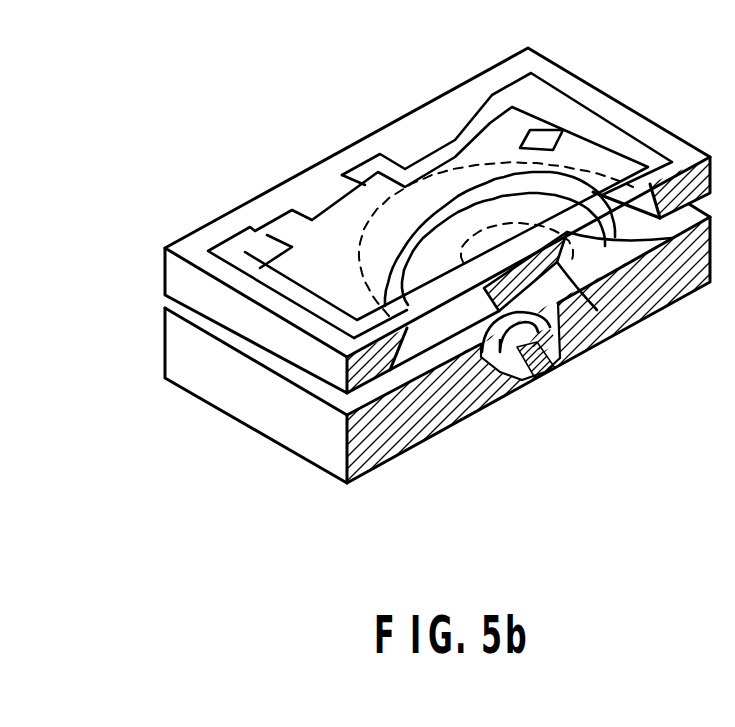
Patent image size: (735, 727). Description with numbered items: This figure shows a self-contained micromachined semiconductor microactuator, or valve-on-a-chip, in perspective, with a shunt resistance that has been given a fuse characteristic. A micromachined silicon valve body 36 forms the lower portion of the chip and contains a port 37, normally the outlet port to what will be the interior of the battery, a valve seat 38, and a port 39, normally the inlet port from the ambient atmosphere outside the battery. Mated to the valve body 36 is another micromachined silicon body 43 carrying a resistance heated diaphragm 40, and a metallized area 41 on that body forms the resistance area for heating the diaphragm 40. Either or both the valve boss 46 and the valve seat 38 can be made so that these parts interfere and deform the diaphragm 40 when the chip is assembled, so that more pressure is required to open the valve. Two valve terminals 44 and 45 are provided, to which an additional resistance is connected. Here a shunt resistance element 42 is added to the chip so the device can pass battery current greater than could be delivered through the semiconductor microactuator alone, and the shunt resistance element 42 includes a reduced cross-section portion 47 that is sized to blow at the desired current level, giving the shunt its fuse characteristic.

The valve body 36 is at (264, 408).
The port 37 is at (523, 382).
The valve seat 38 is at (563, 367).
The port 39 is at (567, 203).
The resistance heated diaphragm 40 is at (635, 126).
The metallized area 41 is at (383, 248).
The shunt resistance element 42 is at (382, 155).
The micromachined silicon body 43 is at (245, 317).
The valve terminal 44 is at (172, 293).
The valve terminal 45 is at (547, 78).
The valve boss 46 is at (613, 336).
The reduced cross-section portion 47 is at (432, 150).